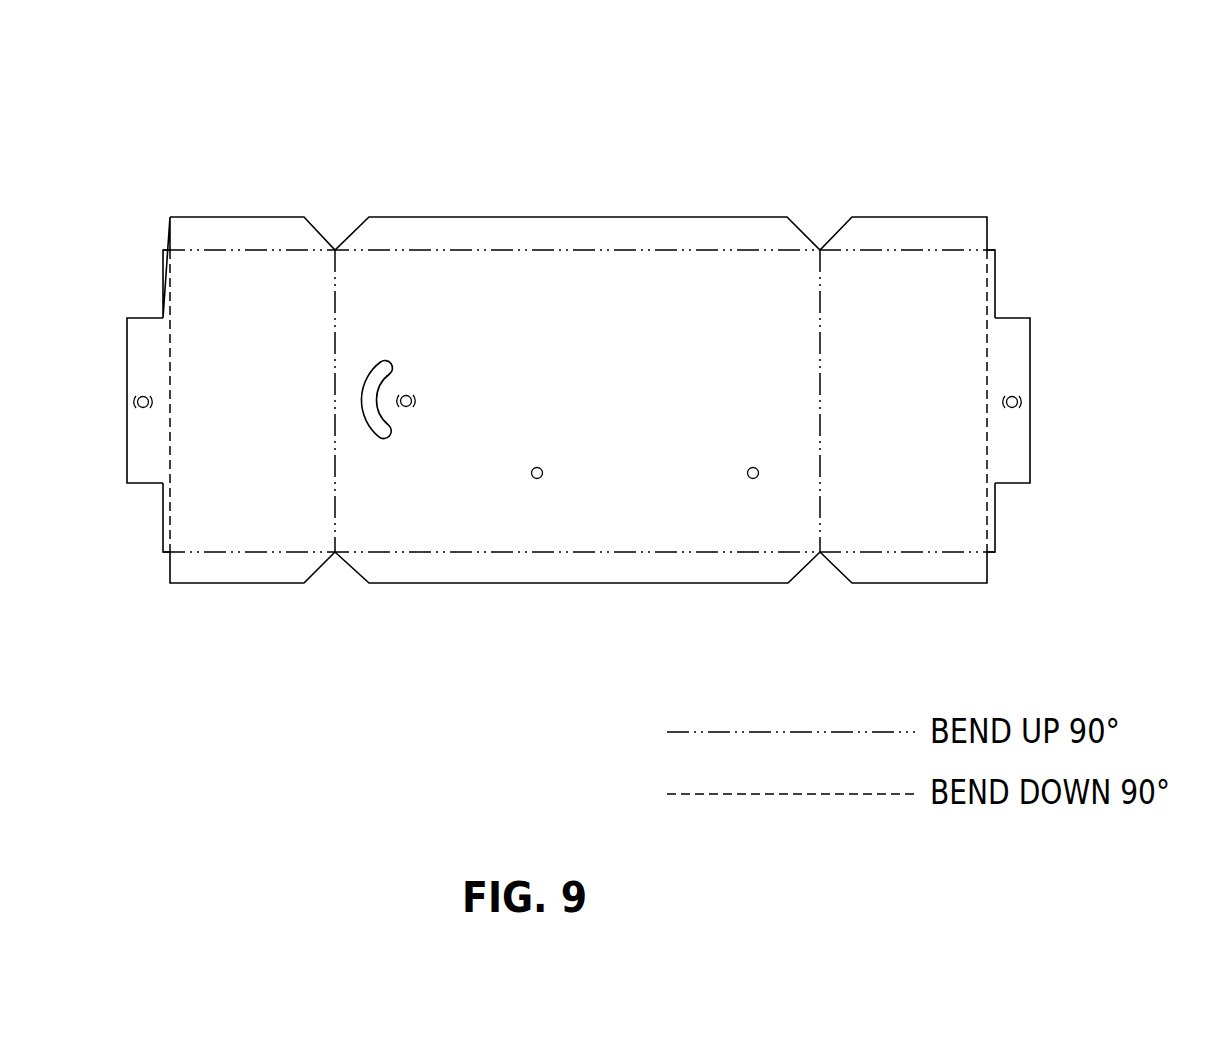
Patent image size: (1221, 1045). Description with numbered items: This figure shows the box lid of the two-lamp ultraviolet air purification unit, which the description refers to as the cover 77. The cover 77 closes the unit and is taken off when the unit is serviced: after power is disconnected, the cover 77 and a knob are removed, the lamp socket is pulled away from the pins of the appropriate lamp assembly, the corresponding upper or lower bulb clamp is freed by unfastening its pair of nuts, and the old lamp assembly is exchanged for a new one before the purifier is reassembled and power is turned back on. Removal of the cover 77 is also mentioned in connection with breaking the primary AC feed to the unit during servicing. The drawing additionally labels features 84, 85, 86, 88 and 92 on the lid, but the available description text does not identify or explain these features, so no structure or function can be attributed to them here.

The cover 77 is at (740, 141).
The tab mounting hole 84 is at (143, 409).
The arcuate slot 85 is at (385, 362).
The pivot hole 86 is at (407, 393).
The mounting tab 88 is at (149, 332).
The hole 92 is at (540, 480).